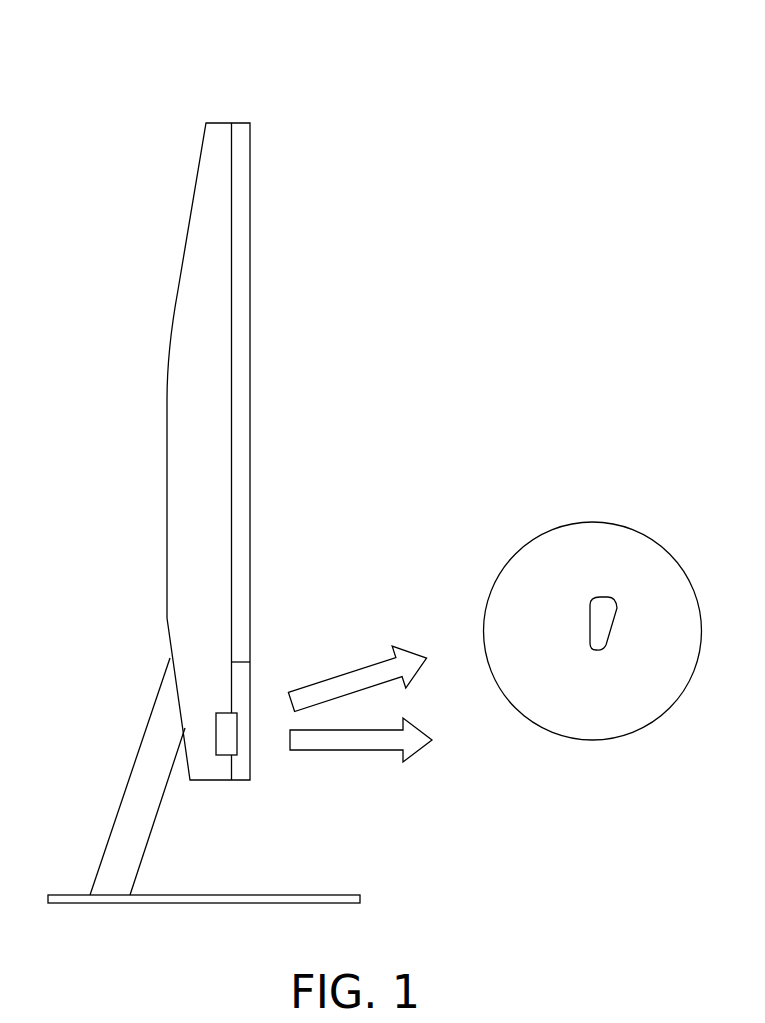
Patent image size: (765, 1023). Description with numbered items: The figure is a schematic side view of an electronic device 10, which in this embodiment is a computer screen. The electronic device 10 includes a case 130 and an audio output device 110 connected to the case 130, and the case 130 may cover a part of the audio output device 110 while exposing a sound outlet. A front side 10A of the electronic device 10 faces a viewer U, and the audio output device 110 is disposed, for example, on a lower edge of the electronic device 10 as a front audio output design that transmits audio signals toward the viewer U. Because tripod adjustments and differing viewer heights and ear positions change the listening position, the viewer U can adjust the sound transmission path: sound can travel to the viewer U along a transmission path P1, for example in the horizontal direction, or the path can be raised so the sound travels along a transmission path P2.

The electronic device 10 is at (160, 122).
The front side 10A is at (252, 192).
The audio output device 110 is at (227, 735).
The case 130 is at (250, 662).
The transmission path P1 is at (353, 740).
The transmission path P2 is at (368, 675).
The viewer U is at (594, 521).